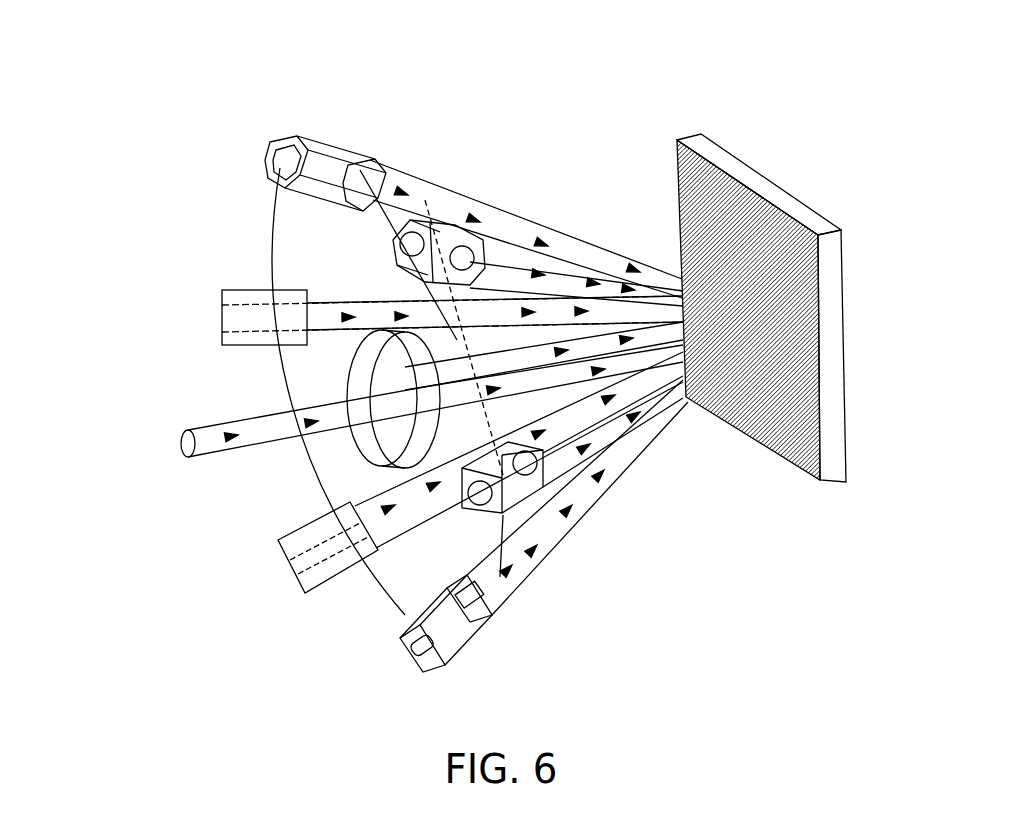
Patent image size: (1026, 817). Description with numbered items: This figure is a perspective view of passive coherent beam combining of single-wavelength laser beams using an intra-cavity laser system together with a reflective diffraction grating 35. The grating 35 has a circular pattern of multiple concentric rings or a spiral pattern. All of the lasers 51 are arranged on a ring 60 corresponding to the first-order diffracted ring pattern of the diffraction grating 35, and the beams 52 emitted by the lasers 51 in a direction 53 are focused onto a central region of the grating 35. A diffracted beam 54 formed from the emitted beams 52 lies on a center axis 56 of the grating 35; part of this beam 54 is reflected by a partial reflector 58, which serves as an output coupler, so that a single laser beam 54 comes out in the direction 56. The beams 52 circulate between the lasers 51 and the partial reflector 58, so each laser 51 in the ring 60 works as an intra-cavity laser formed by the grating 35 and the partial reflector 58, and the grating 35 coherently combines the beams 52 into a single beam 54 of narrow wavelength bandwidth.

The reflective diffraction grating 35 is at (765, 185).
The single-wavelength laser 51 is at (297, 134).
The emitted beam 52 is at (507, 227).
The emission direction 53 is at (568, 250).
The diffracted beam 54 is at (253, 417).
The center axis 56 is at (227, 453).
The partial reflector 58 is at (548, 428).
The ring 60 is at (398, 600).